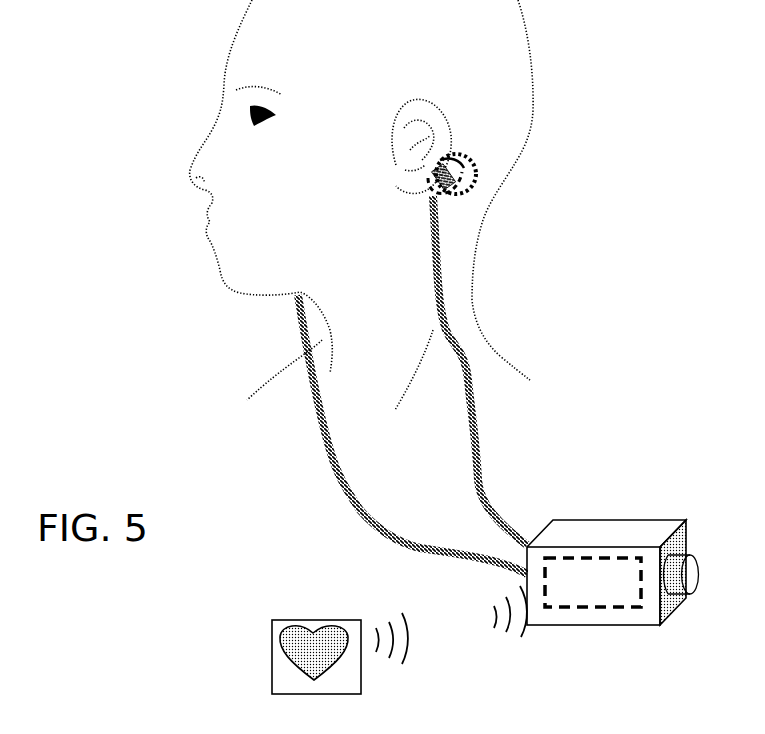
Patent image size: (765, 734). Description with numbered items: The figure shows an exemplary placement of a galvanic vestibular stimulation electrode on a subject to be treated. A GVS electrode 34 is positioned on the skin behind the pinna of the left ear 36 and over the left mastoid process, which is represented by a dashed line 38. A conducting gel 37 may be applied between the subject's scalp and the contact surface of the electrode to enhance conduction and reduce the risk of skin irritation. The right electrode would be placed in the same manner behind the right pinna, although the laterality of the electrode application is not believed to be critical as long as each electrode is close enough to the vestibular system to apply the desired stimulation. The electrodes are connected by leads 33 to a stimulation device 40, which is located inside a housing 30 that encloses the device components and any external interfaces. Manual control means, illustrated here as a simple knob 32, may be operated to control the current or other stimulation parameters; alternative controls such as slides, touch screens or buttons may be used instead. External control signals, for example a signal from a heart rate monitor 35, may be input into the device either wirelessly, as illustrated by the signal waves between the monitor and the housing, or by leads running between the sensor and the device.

The housing 30 is at (616, 538).
The user controls 32 is at (686, 567).
The leads 33 is at (472, 432).
The GVS electrode 34 is at (451, 156).
The heart rate monitor 35 is at (313, 632).
The left ear 36 is at (437, 119).
The conducting gel 37 is at (463, 194).
The mastoid process 38 is at (463, 164).
The stimulation device 40 is at (583, 592).